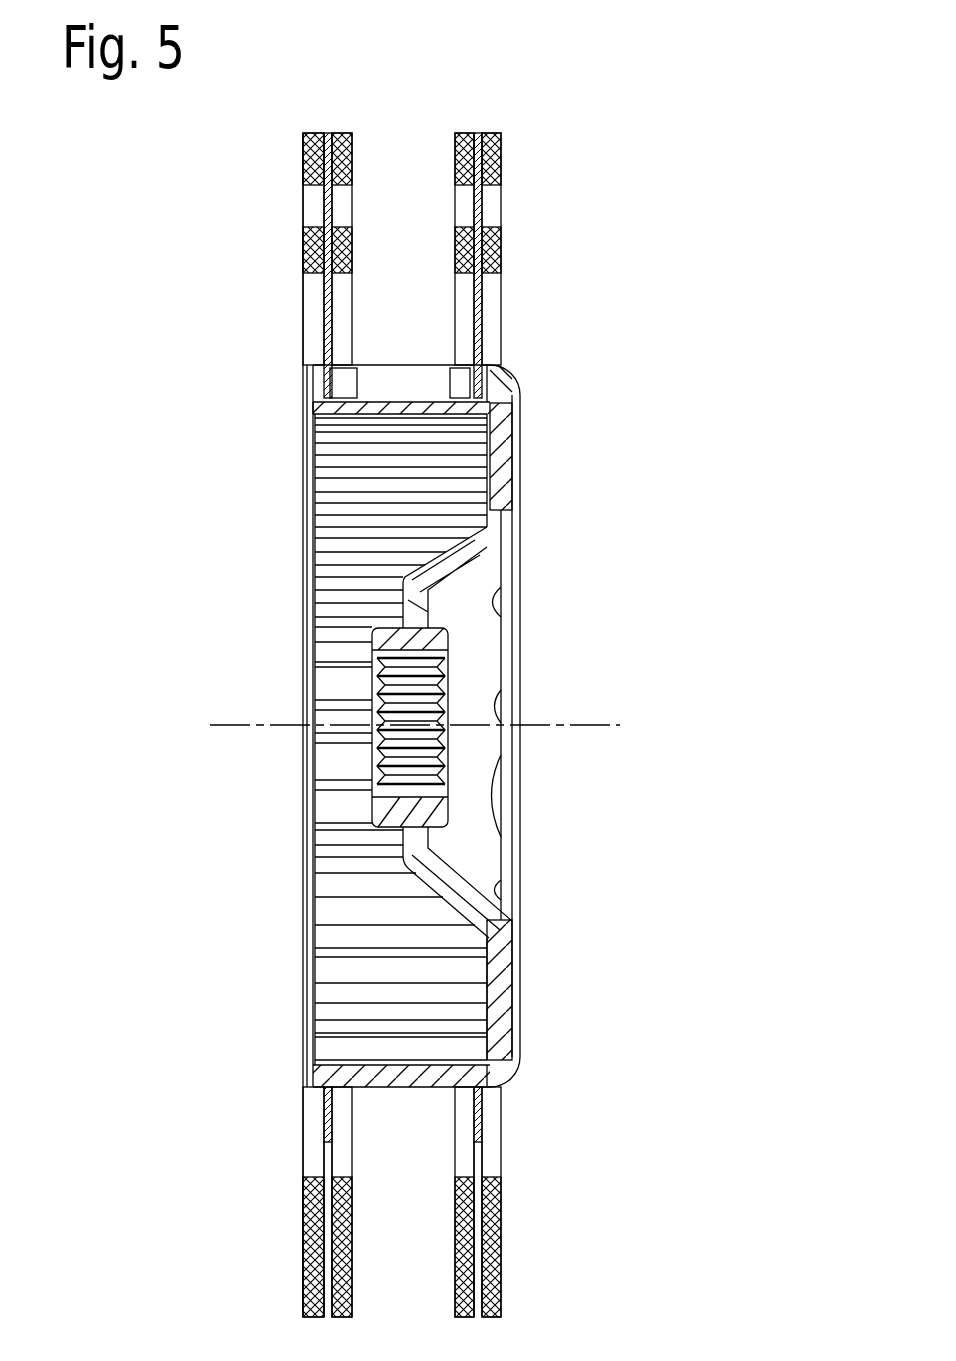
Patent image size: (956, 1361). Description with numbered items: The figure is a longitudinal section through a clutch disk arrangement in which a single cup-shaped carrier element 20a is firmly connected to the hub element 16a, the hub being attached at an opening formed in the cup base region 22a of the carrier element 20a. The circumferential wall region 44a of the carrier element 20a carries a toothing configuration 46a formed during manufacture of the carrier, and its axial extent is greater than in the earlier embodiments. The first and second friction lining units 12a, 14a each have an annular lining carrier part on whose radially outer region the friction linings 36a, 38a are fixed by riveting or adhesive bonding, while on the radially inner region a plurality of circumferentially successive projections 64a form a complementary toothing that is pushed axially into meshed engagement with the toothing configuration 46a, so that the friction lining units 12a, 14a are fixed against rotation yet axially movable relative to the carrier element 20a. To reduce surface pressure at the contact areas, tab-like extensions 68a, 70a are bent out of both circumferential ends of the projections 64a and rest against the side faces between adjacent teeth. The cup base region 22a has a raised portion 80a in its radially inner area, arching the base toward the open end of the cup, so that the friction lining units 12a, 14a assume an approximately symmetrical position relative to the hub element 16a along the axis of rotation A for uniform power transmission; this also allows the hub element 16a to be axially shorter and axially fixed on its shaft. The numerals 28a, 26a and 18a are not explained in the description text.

The first friction lining unit 12a is at (497, 103).
The second friction lining unit 14a is at (331, 113).
The friction lining 36a is at (312, 133).
The friction lining 38a is at (350, 133).
The circumferential wall region 44a is at (397, 362).
The projections 64a is at (317, 380).
The tab-like extension 68a is at (322, 403).
The tab-like extension 70a is at (460, 377).
The toothing configuration 46a is at (515, 415).
The carrier element 20a is at (515, 413).
The housing thick wall section 28a is at (502, 477).
The cup base region 22a is at (440, 618).
The bead 26a is at (495, 583).
The hub element 16a is at (450, 702).
The thread 18a is at (450, 755).
The raised portion 80a is at (460, 870).
The axis of rotation A is at (233, 723).